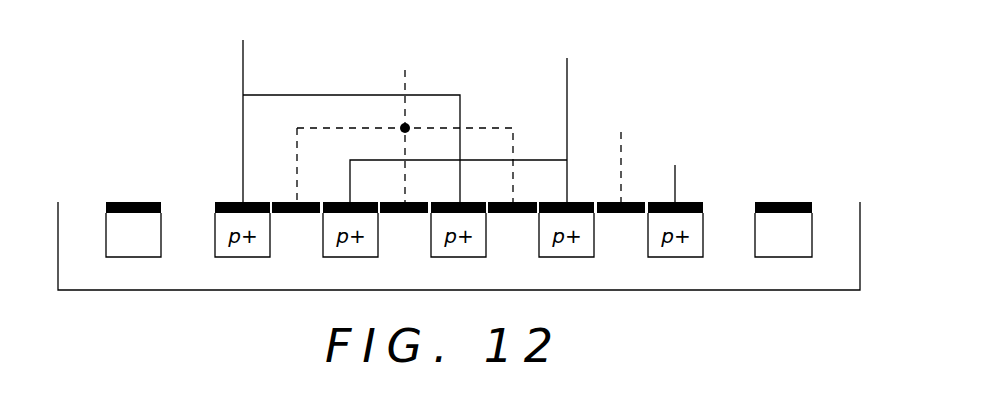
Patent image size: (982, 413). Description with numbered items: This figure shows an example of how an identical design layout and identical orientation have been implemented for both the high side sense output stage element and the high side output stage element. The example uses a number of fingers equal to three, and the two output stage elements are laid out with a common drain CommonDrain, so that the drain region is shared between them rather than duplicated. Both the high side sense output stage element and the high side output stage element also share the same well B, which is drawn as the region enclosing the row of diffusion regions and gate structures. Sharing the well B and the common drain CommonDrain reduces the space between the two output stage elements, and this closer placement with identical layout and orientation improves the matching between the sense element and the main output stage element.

The well B is at (133, 202).
The common drain CommonDrain is at (478, 107).